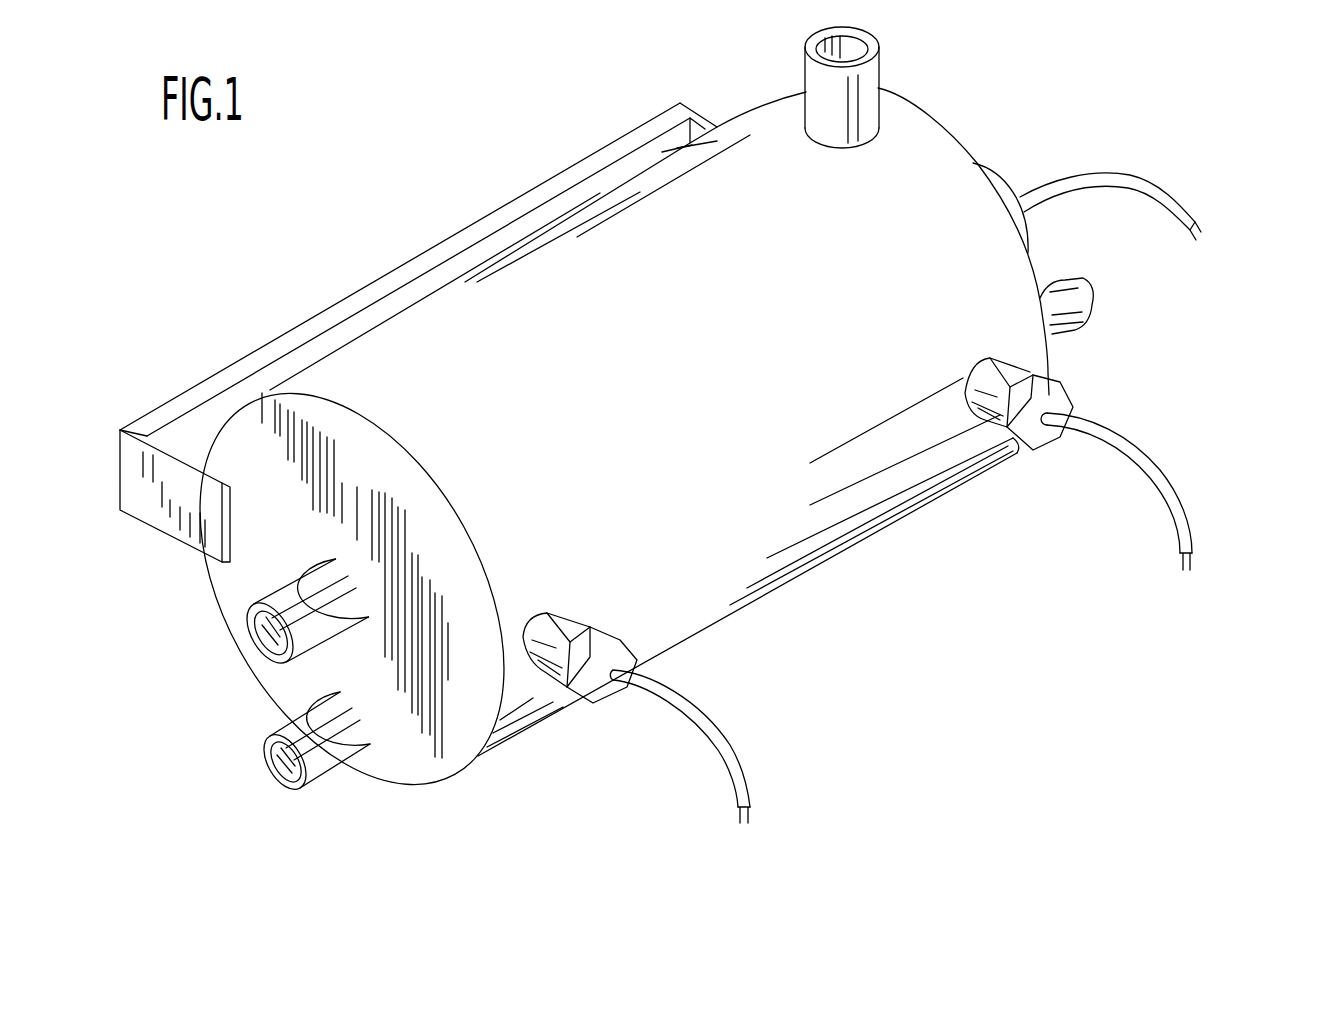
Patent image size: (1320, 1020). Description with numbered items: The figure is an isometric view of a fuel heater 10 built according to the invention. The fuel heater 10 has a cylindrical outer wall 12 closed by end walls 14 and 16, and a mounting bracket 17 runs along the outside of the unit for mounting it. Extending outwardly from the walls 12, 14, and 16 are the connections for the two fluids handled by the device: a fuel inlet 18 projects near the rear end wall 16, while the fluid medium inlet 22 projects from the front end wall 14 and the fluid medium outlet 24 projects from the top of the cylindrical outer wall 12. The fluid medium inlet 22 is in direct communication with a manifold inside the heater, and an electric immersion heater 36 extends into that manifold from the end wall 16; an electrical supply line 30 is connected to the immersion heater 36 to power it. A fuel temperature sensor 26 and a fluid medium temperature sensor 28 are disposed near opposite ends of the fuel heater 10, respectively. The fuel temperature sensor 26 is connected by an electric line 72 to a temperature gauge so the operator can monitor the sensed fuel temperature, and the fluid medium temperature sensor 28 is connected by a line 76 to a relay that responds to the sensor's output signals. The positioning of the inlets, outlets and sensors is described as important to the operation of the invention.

The fuel heater 10 is at (480, 120).
The cylindrical outer wall 12 is at (815, 567).
The end wall 14 is at (220, 610).
The end wall 16 is at (930, 118).
The mounting bracket 17 is at (333, 307).
The fuel inlet 18 is at (1060, 283).
The fluid medium inlet 22 is at (247, 643).
The fluid medium outlet 24 is at (880, 65).
The fuel temperature sensor 26 is at (608, 705).
The fluid medium temperature sensor 28 is at (1060, 388).
The electrical supply line 30 is at (1140, 183).
The electric immersion heater 36 is at (997, 177).
The electric line 72 is at (747, 755).
The line 76 is at (1173, 478).